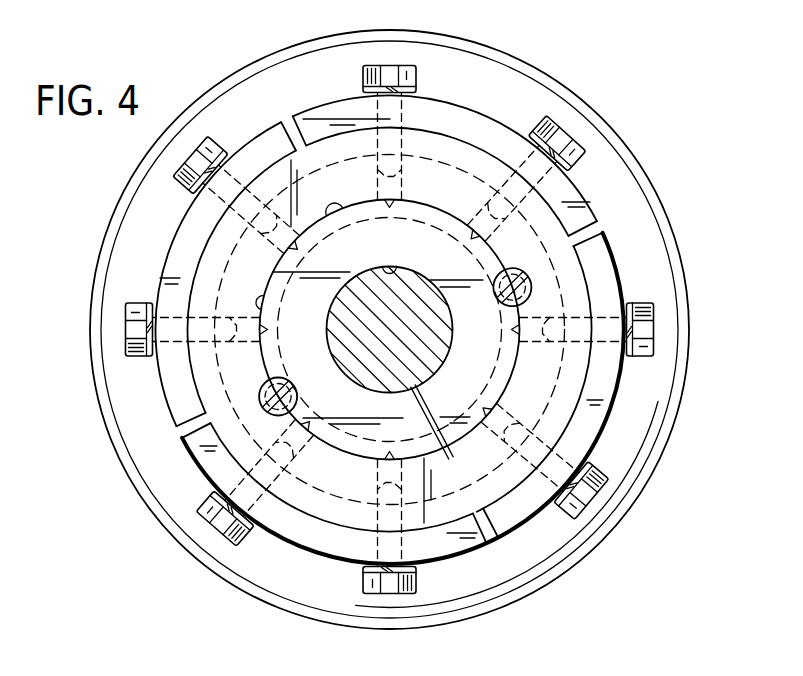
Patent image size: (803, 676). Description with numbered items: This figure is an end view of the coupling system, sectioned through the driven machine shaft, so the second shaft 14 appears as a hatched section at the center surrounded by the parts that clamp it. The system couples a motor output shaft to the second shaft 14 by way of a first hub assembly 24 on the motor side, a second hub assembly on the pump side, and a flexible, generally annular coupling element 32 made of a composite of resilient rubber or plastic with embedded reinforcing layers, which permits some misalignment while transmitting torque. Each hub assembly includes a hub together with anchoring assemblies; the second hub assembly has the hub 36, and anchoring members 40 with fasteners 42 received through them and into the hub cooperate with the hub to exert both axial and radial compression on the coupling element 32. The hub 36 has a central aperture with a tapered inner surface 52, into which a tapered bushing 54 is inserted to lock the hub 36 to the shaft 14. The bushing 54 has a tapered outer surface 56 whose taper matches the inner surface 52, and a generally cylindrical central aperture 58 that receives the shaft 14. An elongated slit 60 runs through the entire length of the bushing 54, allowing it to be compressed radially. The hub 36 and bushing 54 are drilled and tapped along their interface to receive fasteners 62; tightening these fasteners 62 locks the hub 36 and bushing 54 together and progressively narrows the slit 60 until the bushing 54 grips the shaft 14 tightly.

The second shaft 14 is at (345, 341).
The first hub assembly 24 is at (190, 477).
The coupling element 32 is at (522, 79).
The hub 36 is at (580, 284).
The anchoring members 40 is at (567, 187).
The fasteners 42 is at (563, 126).
The tapered inner surface 52 is at (260, 308).
The tapered bushing 54 is at (660, 404).
The tapered outer surface 56 is at (267, 277).
The central aperture 58 is at (391, 272).
The elongated slit 60 is at (451, 458).
The fasteners 62 is at (518, 268).